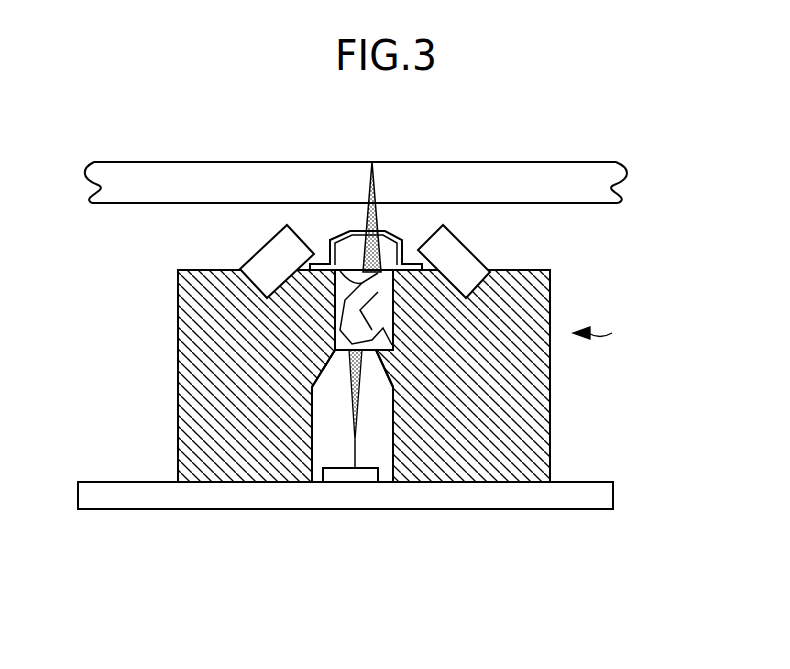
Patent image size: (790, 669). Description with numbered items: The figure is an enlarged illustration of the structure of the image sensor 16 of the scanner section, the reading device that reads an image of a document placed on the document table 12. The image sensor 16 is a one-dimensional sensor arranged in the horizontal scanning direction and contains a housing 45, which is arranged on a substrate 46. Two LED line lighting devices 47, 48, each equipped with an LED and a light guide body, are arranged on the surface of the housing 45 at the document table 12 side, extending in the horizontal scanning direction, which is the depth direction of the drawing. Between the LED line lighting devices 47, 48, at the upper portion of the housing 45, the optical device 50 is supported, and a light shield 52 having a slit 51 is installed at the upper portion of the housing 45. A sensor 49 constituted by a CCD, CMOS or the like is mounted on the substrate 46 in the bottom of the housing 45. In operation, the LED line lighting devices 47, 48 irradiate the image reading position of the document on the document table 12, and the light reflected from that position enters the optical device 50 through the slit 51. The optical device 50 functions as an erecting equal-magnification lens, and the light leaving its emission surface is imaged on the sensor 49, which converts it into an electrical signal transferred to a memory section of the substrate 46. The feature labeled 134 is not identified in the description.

The document table 12 is at (472, 163).
The image sensor 16 is at (609, 334).
The housing 45 is at (190, 428).
The substrate 46 is at (612, 488).
The LED line lighting device 47 is at (258, 251).
The LED line lighting device 48 is at (466, 248).
The sensor 49 is at (355, 483).
The optical device 50 is at (335, 325).
The slit 51 is at (356, 228).
The light shield 52 is at (336, 238).
The channel 134 is at (324, 383).